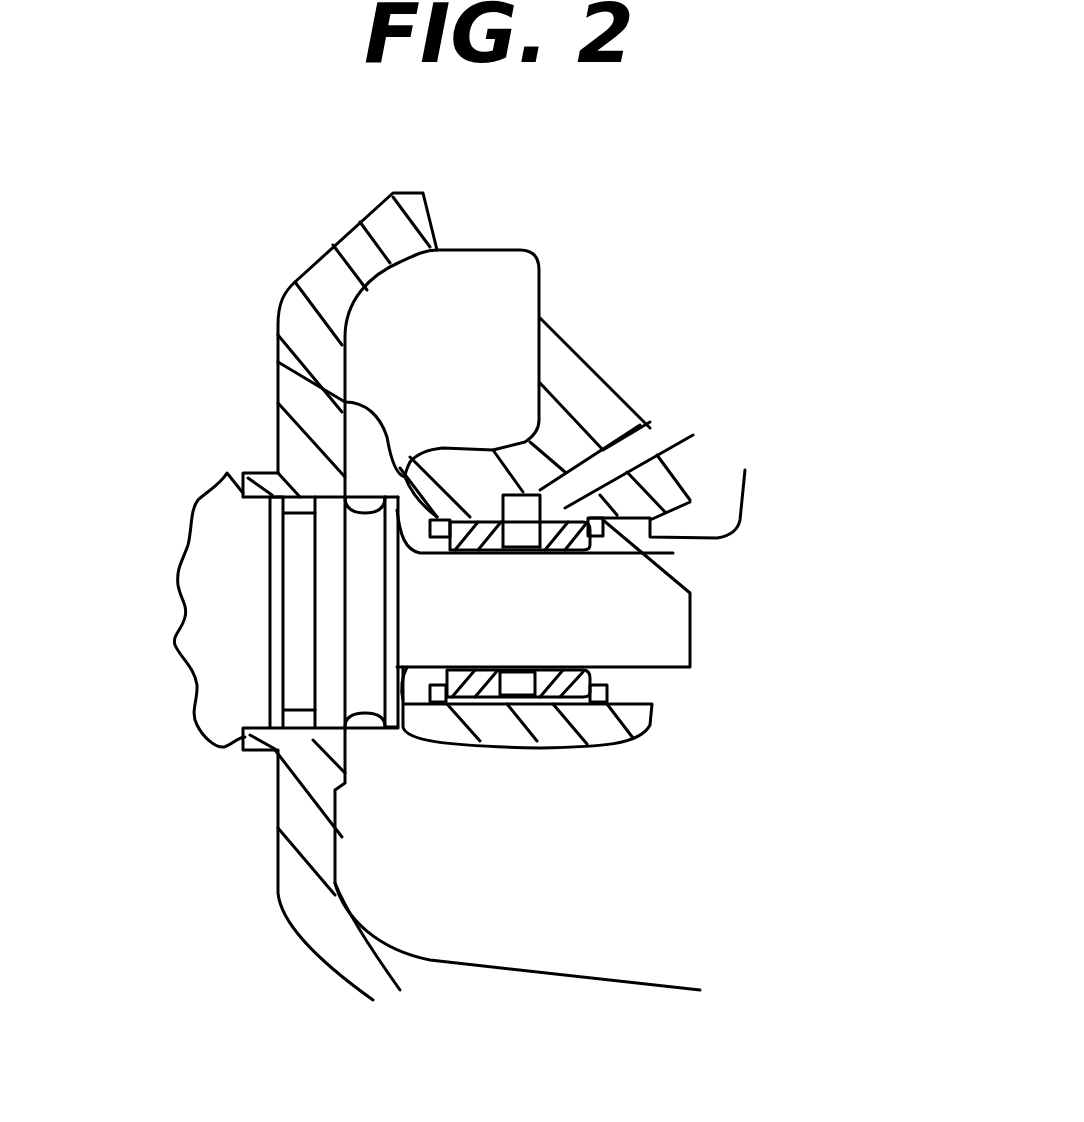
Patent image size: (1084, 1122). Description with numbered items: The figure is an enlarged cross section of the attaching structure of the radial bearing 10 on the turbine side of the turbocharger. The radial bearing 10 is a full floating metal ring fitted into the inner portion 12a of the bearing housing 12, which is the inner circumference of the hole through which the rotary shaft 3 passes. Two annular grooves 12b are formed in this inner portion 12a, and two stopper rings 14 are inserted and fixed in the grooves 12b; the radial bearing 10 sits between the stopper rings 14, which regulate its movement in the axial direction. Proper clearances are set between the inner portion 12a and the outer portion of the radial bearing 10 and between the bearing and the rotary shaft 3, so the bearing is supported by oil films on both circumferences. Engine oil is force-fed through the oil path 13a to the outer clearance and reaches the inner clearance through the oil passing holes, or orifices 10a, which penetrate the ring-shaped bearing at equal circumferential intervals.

The rotary shaft 3 is at (628, 623).
The radial bearing 10 is at (540, 735).
The oil passing holes (orifices) 10a is at (527, 493).
The bearing housing 12 is at (273, 357).
The inner portion 12a is at (745, 470).
The annular grooves 12b is at (487, 518).
The oil path 13a is at (630, 447).
The stopper rings 14 is at (433, 542).